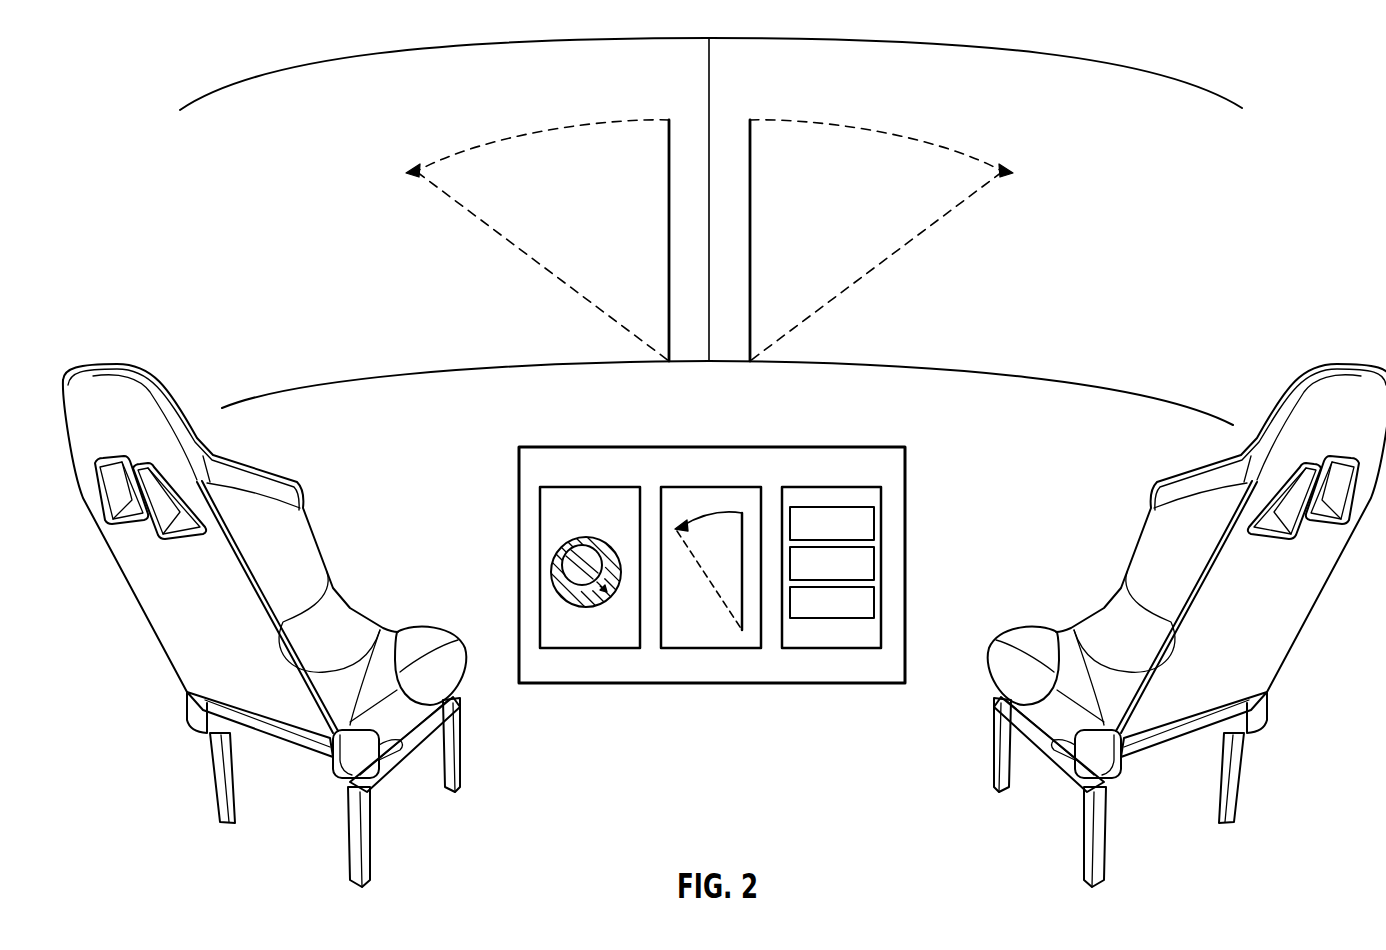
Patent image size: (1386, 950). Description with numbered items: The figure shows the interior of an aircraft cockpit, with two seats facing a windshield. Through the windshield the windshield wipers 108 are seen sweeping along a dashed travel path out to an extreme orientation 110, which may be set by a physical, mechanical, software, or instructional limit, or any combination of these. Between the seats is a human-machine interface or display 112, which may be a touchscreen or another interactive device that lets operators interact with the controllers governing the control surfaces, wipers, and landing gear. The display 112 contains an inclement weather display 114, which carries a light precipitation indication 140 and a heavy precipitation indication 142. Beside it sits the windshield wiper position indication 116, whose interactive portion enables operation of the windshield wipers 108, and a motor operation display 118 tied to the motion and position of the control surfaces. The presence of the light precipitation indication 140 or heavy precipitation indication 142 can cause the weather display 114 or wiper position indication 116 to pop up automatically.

The windshield wipers 108 is at (669, 120).
The extreme orientation 110 is at (410, 170).
The display 112 is at (580, 447).
The inclement weather display 114 is at (546, 550).
The windshield wiper position indication 116 is at (702, 496).
The motor operation display 118 is at (826, 496).
The light precipitation indication 140 is at (566, 562).
The heavy precipitation indication 142 is at (566, 566).